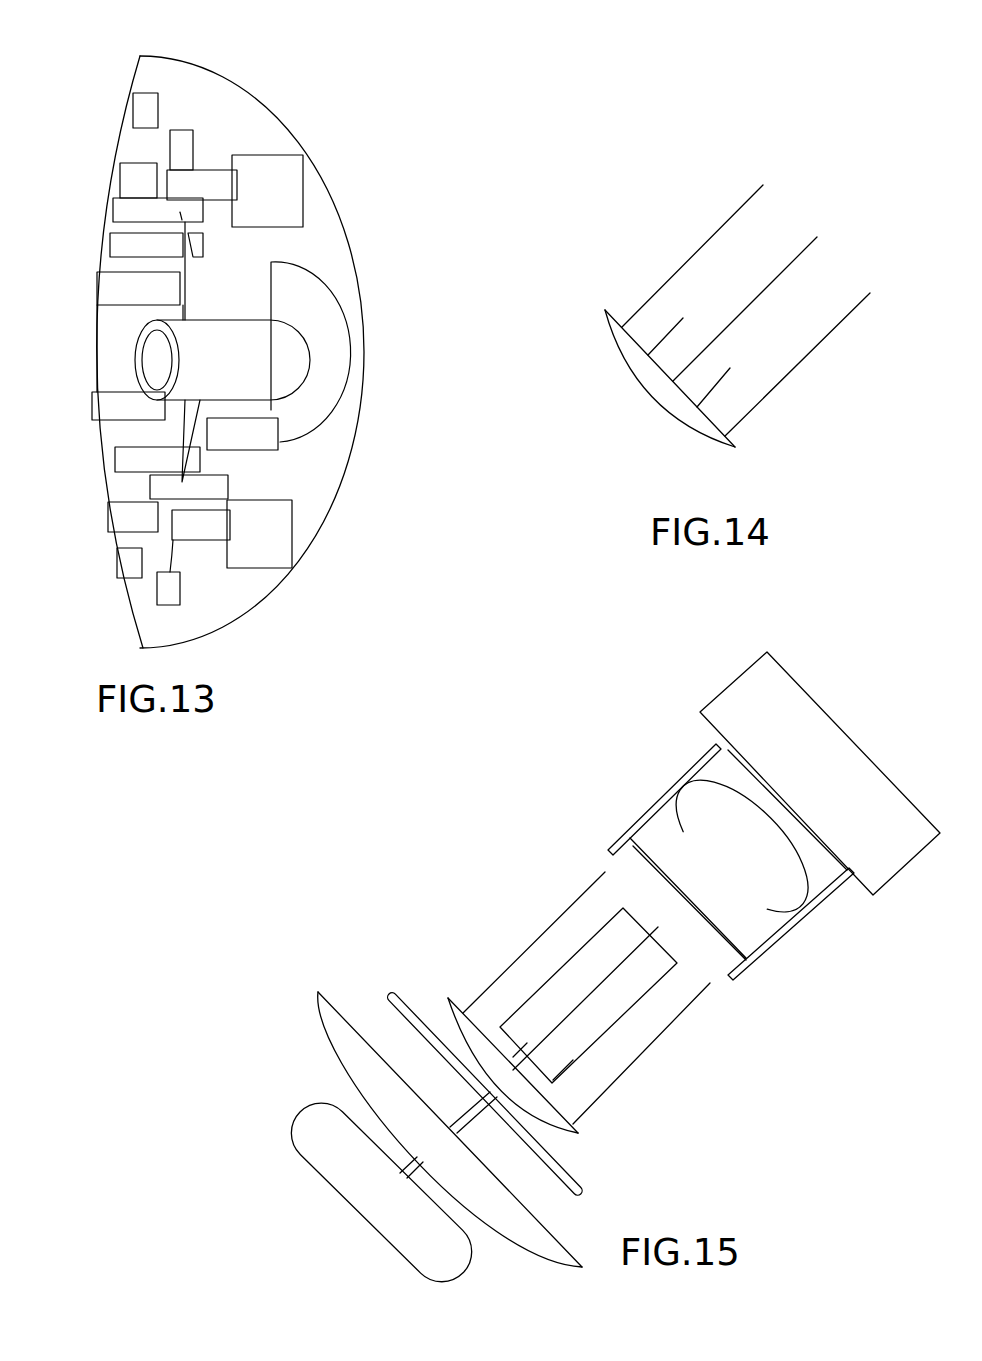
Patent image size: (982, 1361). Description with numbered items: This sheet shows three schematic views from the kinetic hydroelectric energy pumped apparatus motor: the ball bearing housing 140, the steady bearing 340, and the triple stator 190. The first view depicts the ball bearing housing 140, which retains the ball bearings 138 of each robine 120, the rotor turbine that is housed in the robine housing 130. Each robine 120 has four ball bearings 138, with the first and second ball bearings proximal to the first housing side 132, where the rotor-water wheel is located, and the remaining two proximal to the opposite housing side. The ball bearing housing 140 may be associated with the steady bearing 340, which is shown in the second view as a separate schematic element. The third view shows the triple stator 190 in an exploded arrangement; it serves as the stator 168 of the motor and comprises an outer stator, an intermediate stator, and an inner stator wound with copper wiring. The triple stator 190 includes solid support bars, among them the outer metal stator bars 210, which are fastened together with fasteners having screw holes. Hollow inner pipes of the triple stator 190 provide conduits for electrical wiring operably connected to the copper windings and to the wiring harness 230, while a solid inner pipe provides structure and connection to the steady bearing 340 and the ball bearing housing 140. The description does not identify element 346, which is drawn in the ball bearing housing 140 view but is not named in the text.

In FIG. 15, the robine 120 is at (272, 1076).
In FIG. 15, the robine housing 130 is at (343, 1168).
In FIG. 13, the first housing side 132 is at (96, 54).
In FIG. 13, the ball bearings 138 is at (333, 383).
In FIG. 15, the ball bearings 138 is at (320, 1010).
In FIG. 13, the ball bearing housing 140 is at (265, 105).
In FIG. 15, the ball bearing housing 140 is at (398, 1113).
In FIG. 15, the stator 168 is at (500, 830).
In FIG. 13, the triple stator 190 is at (148, 100).
In FIG. 15, the triple stator 190 is at (547, 973).
In FIG. 13, the outer metal stator bars 210 is at (180, 140).
In FIG. 13, the wiring harness 230 is at (297, 178).
In FIG. 14, the steady bearing 340 is at (594, 302).
In FIG. 15, the steady bearing 340 is at (452, 1000).
In FIG. 13, the connector 346 is at (123, 210).